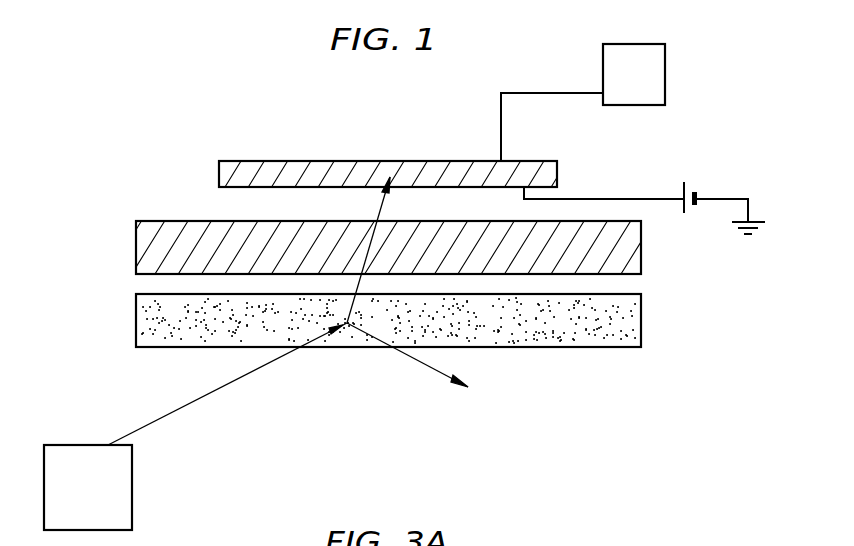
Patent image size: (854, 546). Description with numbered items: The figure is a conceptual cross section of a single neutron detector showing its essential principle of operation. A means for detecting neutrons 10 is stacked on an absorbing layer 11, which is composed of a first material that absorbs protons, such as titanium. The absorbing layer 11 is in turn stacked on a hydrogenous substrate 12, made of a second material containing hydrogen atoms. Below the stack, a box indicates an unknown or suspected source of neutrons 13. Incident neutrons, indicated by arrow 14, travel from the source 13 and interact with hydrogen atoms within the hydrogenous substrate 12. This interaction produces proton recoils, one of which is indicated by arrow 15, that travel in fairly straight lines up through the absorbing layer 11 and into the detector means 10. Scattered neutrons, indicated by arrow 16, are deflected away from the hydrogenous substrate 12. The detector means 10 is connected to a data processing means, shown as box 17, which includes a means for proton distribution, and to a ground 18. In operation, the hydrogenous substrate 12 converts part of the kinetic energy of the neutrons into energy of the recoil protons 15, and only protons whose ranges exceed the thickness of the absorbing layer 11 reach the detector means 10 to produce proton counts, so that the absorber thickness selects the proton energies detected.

The means for detecting neutrons 10 is at (219, 176).
The absorbing layer 11 is at (136, 247).
The hydrogenous substrate 12 is at (136, 324).
The source of neutrons 13 is at (72, 445).
The incident neutrons 14 is at (188, 403).
The proton recoil 15 is at (370, 243).
The scattered neutrons 16 is at (429, 368).
The data processing means 17 is at (665, 62).
The ground 18 is at (748, 199).